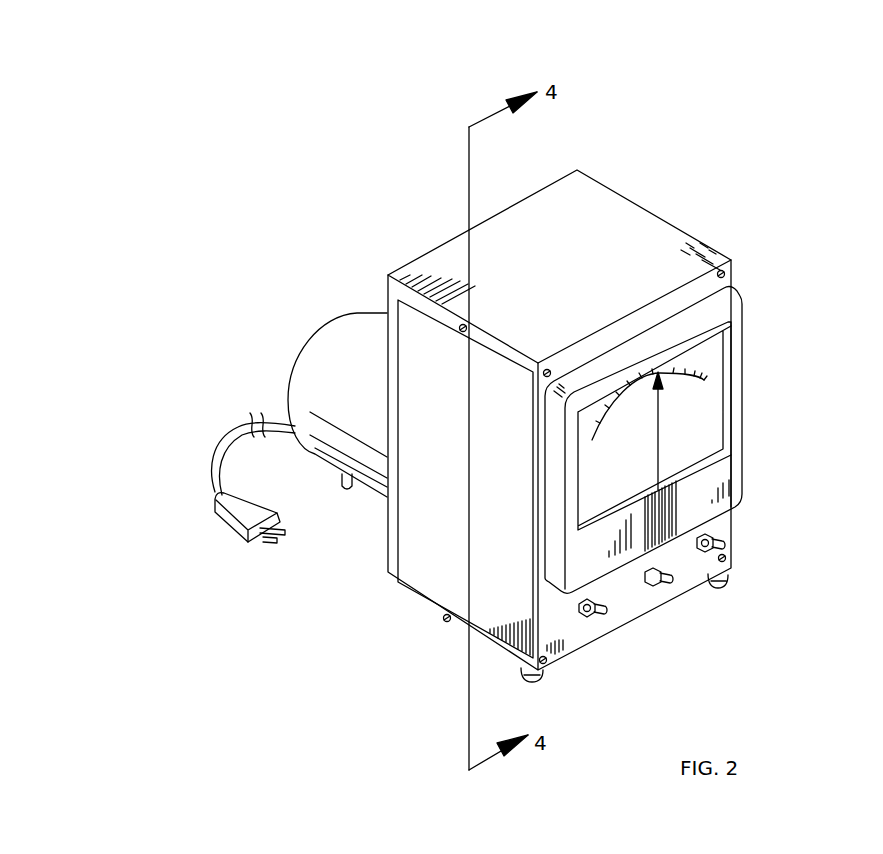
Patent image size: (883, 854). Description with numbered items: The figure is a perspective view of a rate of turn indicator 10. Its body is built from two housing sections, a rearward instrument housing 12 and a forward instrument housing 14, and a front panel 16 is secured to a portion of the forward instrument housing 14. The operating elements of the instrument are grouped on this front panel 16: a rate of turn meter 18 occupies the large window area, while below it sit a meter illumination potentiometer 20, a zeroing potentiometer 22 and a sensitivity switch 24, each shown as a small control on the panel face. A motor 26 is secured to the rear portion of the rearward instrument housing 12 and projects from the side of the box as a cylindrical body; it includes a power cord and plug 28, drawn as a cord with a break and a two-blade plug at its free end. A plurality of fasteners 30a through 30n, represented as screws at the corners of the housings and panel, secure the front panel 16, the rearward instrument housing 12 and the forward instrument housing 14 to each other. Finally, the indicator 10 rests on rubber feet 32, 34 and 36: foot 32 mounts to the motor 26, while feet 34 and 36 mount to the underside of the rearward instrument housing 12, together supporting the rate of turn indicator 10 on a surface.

The rate of turn indicator 10 is at (802, 96).
The rearward instrument housing 12 is at (598, 203).
The forward instrument housing 14 is at (415, 553).
The front panel 16 is at (723, 283).
The rate of turn meter 18 is at (703, 417).
The meter illumination potentiometer 20 is at (597, 617).
The zeroing potentiometer 22 is at (723, 548).
The sensitivity switch 24 is at (663, 582).
The motor 26 is at (305, 372).
The power cord and plug 28 is at (210, 472).
The fastener 30a is at (728, 260).
The fastener 30n is at (445, 623).
The rubber foot 32 is at (347, 490).
The rubber foot 34 is at (530, 683).
The rubber foot 36 is at (727, 578).